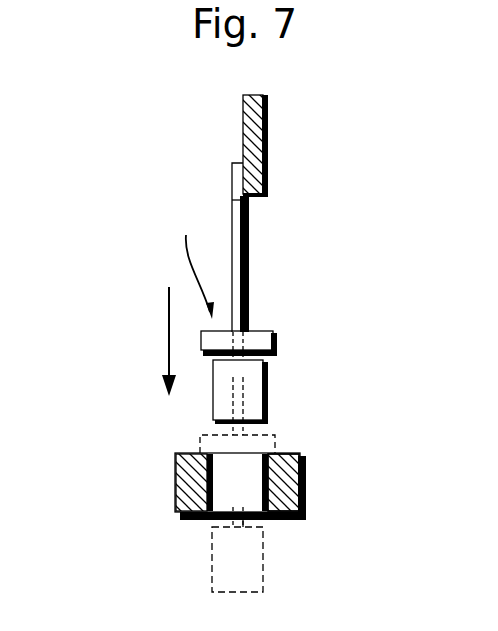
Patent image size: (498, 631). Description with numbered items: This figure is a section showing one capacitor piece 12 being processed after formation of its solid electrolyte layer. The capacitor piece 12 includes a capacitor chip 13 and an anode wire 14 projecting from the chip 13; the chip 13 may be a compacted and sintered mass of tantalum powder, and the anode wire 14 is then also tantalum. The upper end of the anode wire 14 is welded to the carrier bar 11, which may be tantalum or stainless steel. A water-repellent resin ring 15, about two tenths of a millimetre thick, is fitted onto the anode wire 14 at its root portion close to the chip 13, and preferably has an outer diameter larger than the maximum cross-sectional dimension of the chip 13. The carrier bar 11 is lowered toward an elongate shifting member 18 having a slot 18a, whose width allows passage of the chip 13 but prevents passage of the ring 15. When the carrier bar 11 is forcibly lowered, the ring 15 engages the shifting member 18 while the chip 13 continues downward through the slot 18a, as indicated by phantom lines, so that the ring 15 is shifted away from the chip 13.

The carrier bar 11 is at (268, 168).
The capacitor piece 12 is at (193, 257).
The capacitor chip 13 is at (262, 390).
The anode wire 14 is at (249, 248).
The water-repellent resin ring 15 is at (278, 337).
The shifting member 18 is at (175, 485).
The slot 18a is at (303, 475).